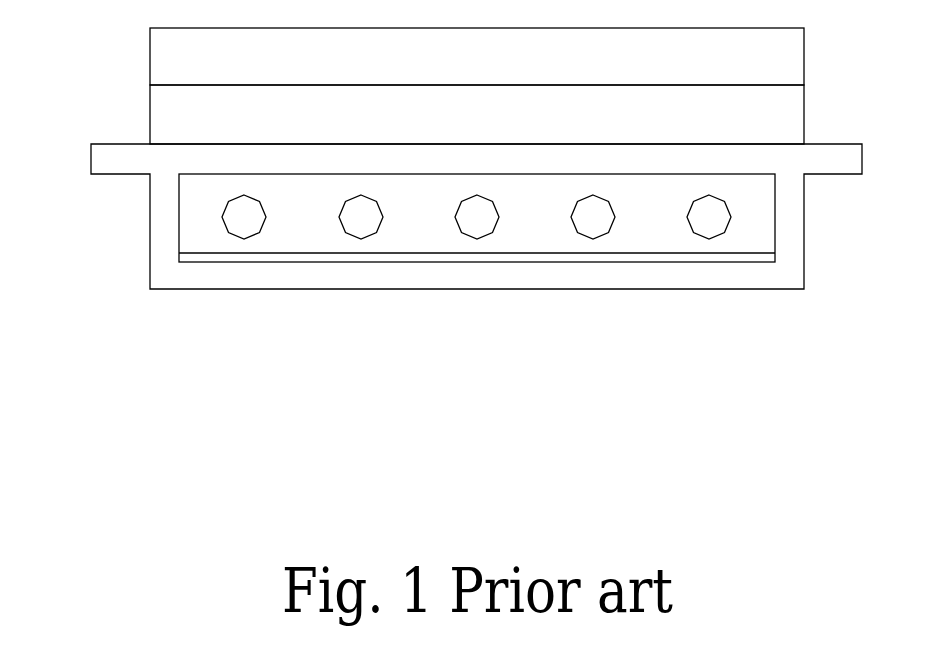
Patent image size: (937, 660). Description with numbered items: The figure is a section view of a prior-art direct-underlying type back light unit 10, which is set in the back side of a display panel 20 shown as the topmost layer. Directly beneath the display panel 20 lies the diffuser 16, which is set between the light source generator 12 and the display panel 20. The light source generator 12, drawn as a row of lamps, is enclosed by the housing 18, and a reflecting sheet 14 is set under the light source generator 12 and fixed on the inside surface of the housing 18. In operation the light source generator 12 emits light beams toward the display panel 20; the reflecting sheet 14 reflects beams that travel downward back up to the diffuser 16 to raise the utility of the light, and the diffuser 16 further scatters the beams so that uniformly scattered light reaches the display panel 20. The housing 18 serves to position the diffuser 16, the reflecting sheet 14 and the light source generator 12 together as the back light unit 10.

The direct-underlying type back light unit 10 is at (70, 85).
The light source generator 12 is at (716, 222).
The reflecting sheet 14 is at (695, 255).
The diffuser 16 is at (780, 114).
The housing 18 is at (602, 277).
The display panel 20 is at (780, 54).